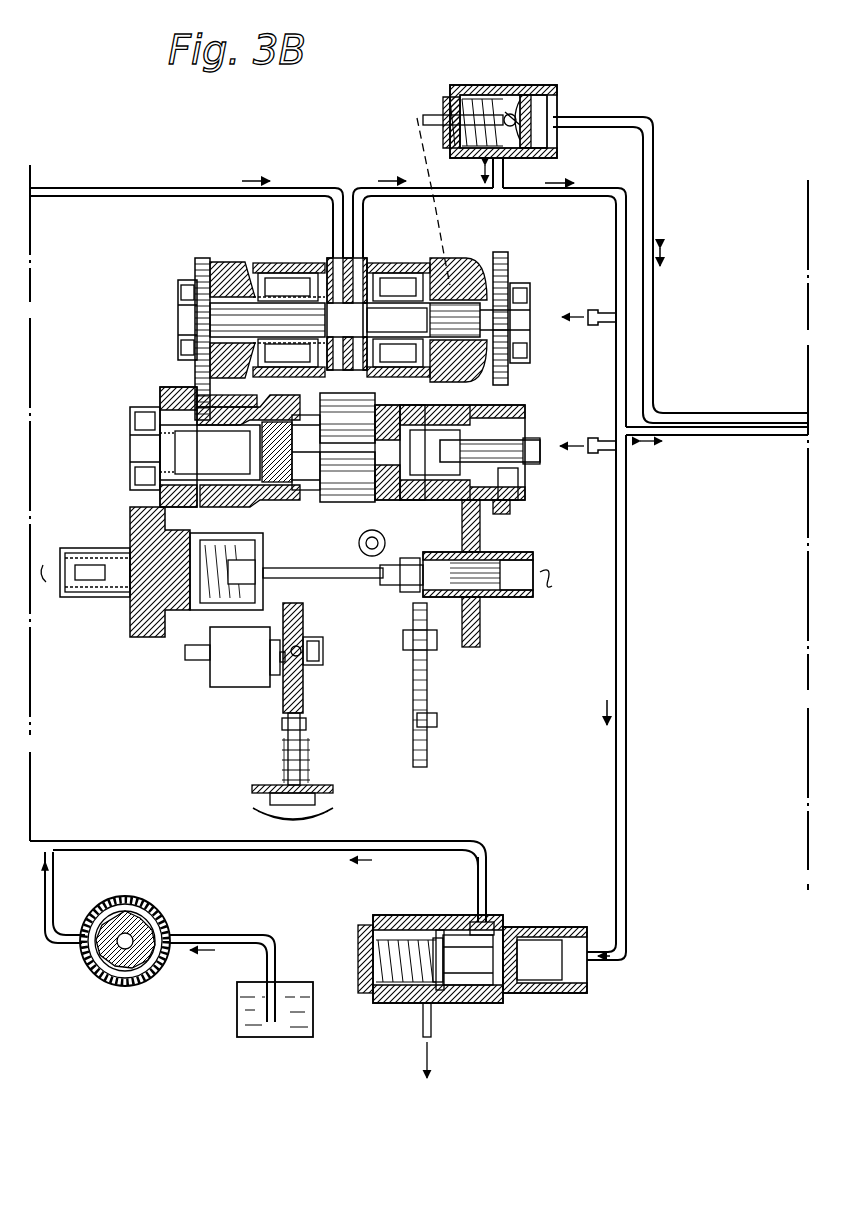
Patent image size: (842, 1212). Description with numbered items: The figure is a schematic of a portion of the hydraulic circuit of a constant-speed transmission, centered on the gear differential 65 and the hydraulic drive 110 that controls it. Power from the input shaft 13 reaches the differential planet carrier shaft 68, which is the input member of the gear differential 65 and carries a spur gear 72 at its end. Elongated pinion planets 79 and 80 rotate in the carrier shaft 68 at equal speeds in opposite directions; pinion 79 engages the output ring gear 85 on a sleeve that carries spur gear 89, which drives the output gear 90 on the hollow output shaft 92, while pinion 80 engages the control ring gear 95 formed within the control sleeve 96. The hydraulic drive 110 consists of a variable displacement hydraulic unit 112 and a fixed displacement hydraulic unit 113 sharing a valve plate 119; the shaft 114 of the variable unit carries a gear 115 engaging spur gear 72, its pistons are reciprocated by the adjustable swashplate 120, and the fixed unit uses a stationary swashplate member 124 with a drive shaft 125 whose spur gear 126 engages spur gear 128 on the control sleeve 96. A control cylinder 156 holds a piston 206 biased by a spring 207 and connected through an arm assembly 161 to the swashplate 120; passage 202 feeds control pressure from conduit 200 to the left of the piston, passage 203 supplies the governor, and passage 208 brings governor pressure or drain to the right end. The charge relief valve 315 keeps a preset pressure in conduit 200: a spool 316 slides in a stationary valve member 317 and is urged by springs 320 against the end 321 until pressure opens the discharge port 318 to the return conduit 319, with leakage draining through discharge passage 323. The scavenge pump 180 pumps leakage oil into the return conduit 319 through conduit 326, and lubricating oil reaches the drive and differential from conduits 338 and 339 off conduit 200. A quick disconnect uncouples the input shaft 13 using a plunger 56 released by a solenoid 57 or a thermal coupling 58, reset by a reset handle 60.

The input shaft 13 is at (120, 548).
The plunger 56 is at (304, 620).
The solenoid 57 is at (232, 677).
The thermal coupling 58 is at (323, 652).
The reset handle 60 is at (333, 812).
The gear differential 65 is at (128, 453).
The differential planet carrier shaft 68 is at (228, 458).
The spur gear 72 is at (510, 508).
The pinion planet 79 is at (347, 418).
The pinion planet 80 is at (344, 477).
The output ring gear 85 is at (358, 512).
The spur gear 89 is at (452, 505).
The output gear 90 is at (466, 520).
The output shaft 92 is at (525, 570).
The control ring gear 95 is at (310, 500).
The control sleeve 96 is at (258, 512).
The hydraulic drive 110 is at (174, 324).
The variable displacement hydraulic unit 112 is at (400, 260).
The fixed displacement hydraulic unit 113 is at (283, 258).
The shaft 114 is at (400, 330).
The gear 115 is at (505, 255).
The valve plate 119 is at (365, 252).
The swashplate 120 is at (460, 257).
The stationary swashplate member 124 is at (230, 265).
The drive shaft 125 is at (308, 330).
The spur gear 126 is at (195, 262).
The spur gear 128 is at (200, 395).
The control cylinder 156 is at (503, 85).
The arm assembly 161 is at (415, 152).
The scavenge pump 180 is at (160, 915).
The conduit 200 is at (616, 244).
The passage 202 is at (503, 170).
The passage 203 is at (680, 435).
The piston 206 is at (540, 95).
The spring 207 is at (443, 110).
The passage 208 is at (620, 108).
The charge relief valve 315 is at (540, 998).
The spool 316 is at (478, 957).
The stationary valve member 317 is at (515, 927).
The discharge port 318 is at (488, 917).
The return conduit 319 is at (185, 840).
The springs 320 is at (365, 936).
The end 321 is at (445, 995).
The discharge passage 323 is at (421, 1020).
The conduit 326 is at (60, 912).
The conduit 338 is at (608, 318).
The conduit 339 is at (606, 446).